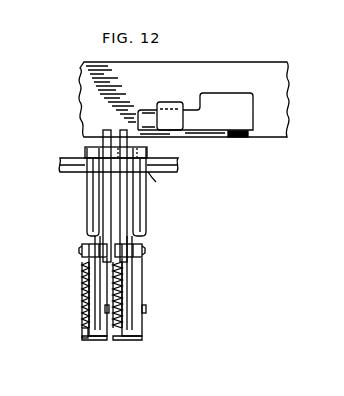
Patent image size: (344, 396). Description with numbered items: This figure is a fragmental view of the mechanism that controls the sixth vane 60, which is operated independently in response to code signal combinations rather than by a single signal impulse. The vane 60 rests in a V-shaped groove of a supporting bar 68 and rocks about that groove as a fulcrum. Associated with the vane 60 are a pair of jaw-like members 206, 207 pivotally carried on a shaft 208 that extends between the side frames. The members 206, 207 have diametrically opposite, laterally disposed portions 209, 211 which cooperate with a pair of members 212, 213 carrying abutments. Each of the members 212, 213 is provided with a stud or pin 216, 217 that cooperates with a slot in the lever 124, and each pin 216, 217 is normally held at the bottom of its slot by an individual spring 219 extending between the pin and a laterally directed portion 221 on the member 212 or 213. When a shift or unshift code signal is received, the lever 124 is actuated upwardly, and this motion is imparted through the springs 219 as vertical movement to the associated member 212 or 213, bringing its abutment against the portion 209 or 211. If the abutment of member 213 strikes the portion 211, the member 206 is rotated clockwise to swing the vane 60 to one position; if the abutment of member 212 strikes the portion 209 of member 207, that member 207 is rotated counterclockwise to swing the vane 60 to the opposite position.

The sixth vane 60 is at (209, 64).
The supporting bars 68 is at (178, 130).
The lever 124 is at (92, 211).
The jaw-like member 206 is at (104, 132).
The jaw-like member 207 is at (125, 131).
The shaft 208 is at (174, 171).
The laterally disposed portion 209 is at (148, 174).
The laterally disposed portion 211 is at (86, 152).
The member 212 is at (98, 236).
The member 213 is at (146, 311).
The pin 216 is at (80, 252).
The pin 217 is at (122, 248).
The spring 219 is at (78, 320).
The laterally directed portion 221 is at (105, 338).